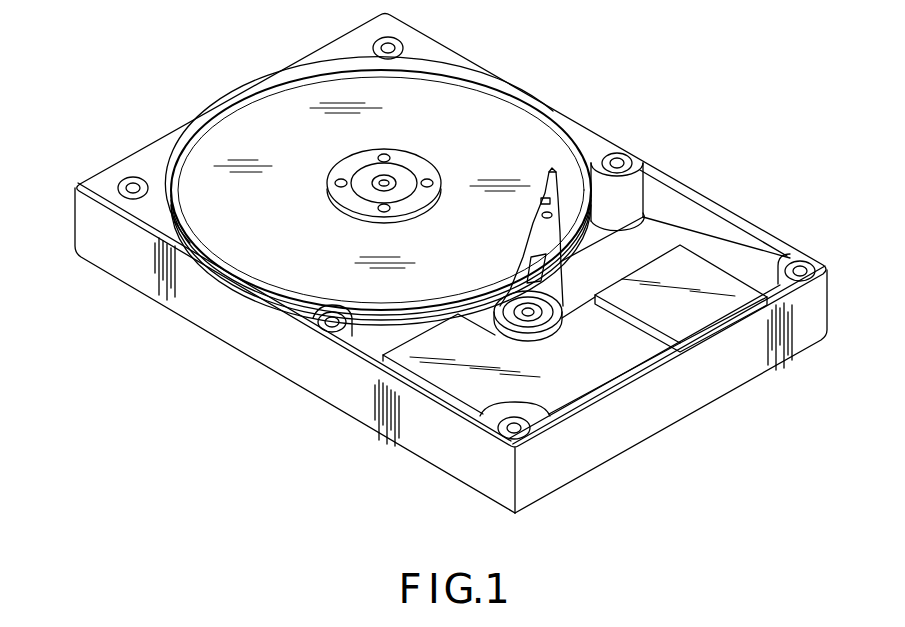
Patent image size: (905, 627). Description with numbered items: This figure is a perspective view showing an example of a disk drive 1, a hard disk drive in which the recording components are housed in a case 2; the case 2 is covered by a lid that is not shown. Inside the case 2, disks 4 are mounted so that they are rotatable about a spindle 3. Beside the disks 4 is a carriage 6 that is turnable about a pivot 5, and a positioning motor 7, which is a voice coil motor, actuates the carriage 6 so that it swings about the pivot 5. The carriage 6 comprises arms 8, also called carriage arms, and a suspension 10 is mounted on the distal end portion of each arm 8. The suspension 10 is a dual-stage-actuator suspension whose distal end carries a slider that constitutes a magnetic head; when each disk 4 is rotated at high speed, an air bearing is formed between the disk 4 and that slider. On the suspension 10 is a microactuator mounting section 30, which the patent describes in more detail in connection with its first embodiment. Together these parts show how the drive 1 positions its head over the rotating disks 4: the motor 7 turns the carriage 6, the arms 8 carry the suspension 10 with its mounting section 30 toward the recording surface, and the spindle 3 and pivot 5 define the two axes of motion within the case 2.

The disk drive 1 is at (451, 264).
The case 2 is at (260, 352).
The spindle 3 is at (400, 170).
The disks 4 is at (492, 117).
The pivot 5 is at (537, 316).
The carriage 6 is at (546, 290).
The positioning motor 7 is at (457, 387).
The arm 8 is at (552, 233).
The suspension 10 is at (547, 183).
The microactuator mounting section 30 is at (538, 203).